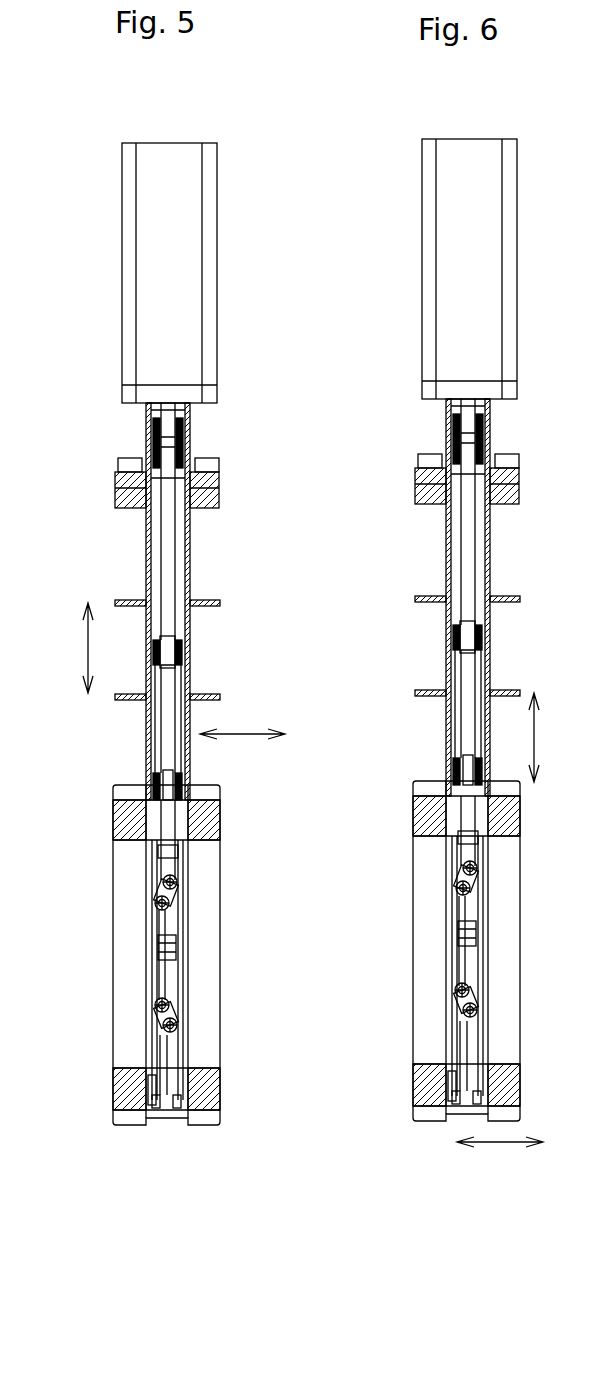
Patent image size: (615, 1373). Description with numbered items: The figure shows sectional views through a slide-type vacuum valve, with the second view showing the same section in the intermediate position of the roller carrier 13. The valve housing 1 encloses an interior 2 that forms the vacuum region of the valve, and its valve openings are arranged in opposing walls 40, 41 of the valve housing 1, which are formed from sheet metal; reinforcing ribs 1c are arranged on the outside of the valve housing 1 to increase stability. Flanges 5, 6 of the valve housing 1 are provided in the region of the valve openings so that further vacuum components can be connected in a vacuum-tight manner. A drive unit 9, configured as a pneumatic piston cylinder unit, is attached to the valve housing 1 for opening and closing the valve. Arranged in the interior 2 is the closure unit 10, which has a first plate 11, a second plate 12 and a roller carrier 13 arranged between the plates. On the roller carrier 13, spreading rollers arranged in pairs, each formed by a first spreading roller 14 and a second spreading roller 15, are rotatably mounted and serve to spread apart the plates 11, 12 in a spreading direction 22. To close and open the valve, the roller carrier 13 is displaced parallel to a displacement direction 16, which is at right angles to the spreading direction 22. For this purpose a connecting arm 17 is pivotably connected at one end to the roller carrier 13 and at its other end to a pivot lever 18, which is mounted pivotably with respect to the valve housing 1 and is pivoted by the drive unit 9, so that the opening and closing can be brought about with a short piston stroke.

In FIG. 5, the valve housing 1 is at (210, 544).
In FIG. 6, the valve housing 1 is at (493, 597).
In FIG. 5, the reinforcing ribs 1c is at (207, 602).
In FIG. 5, the interior 2 is at (152, 714).
In FIG. 5, the flange 5 is at (210, 1098).
In FIG. 6, the flange 5 is at (466, 951).
In FIG. 5, the flange 6 is at (150, 1082).
In FIG. 5, the drive unit 9 is at (237, 212).
In FIG. 6, the drive unit 9 is at (512, 269).
In FIG. 6, the closure unit 10 is at (429, 1114).
In FIG. 5, the first plate 11 is at (176, 985).
In FIG. 6, the first plate 11 is at (518, 950).
In FIG. 5, the second plate 12 is at (158, 1032).
In FIG. 6, the second plate 12 is at (409, 997).
In FIG. 5, the roller carrier 13 is at (163, 935).
In FIG. 6, the roller carrier 13 is at (467, 941).
In FIG. 5, the first spreading roller 14 is at (177, 882).
In FIG. 6, the first spreading roller 14 is at (517, 868).
In FIG. 5, the second spreading roller 15 is at (156, 906).
In FIG. 6, the second spreading roller 15 is at (407, 911).
In FIG. 5, the displacement direction 16 is at (85, 652).
In FIG. 6, the displacement direction 16 is at (563, 737).
In FIG. 5, the connecting arm 17 is at (175, 685).
In FIG. 5, the pivot lever 18 is at (168, 529).
In FIG. 5, the spreading direction 22 is at (245, 732).
In FIG. 6, the spreading direction 22 is at (503, 1172).
In FIG. 5, the wall 40 is at (188, 768).
In FIG. 5, the wall 41 is at (147, 753).